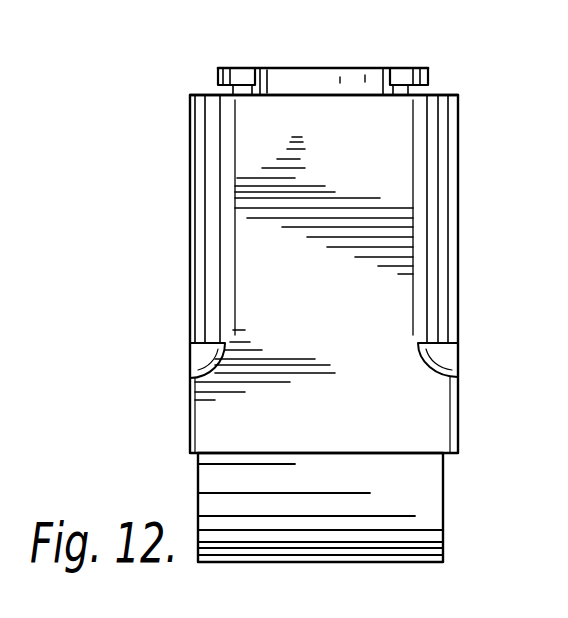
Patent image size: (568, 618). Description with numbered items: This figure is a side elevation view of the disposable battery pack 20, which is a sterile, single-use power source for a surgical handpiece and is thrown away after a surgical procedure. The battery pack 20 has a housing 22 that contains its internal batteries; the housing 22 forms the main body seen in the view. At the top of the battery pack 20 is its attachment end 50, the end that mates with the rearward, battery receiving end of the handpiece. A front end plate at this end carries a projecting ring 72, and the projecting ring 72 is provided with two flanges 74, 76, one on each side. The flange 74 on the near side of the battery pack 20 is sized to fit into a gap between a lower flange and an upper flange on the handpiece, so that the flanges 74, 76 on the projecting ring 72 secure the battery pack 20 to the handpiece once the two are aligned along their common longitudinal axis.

The battery pack 20 is at (310, 290).
The housing 22 is at (458, 255).
The attachment end 50 is at (398, 112).
The projecting ring 72 is at (317, 56).
The flange 74 is at (225, 67).
The flange 76 is at (422, 67).